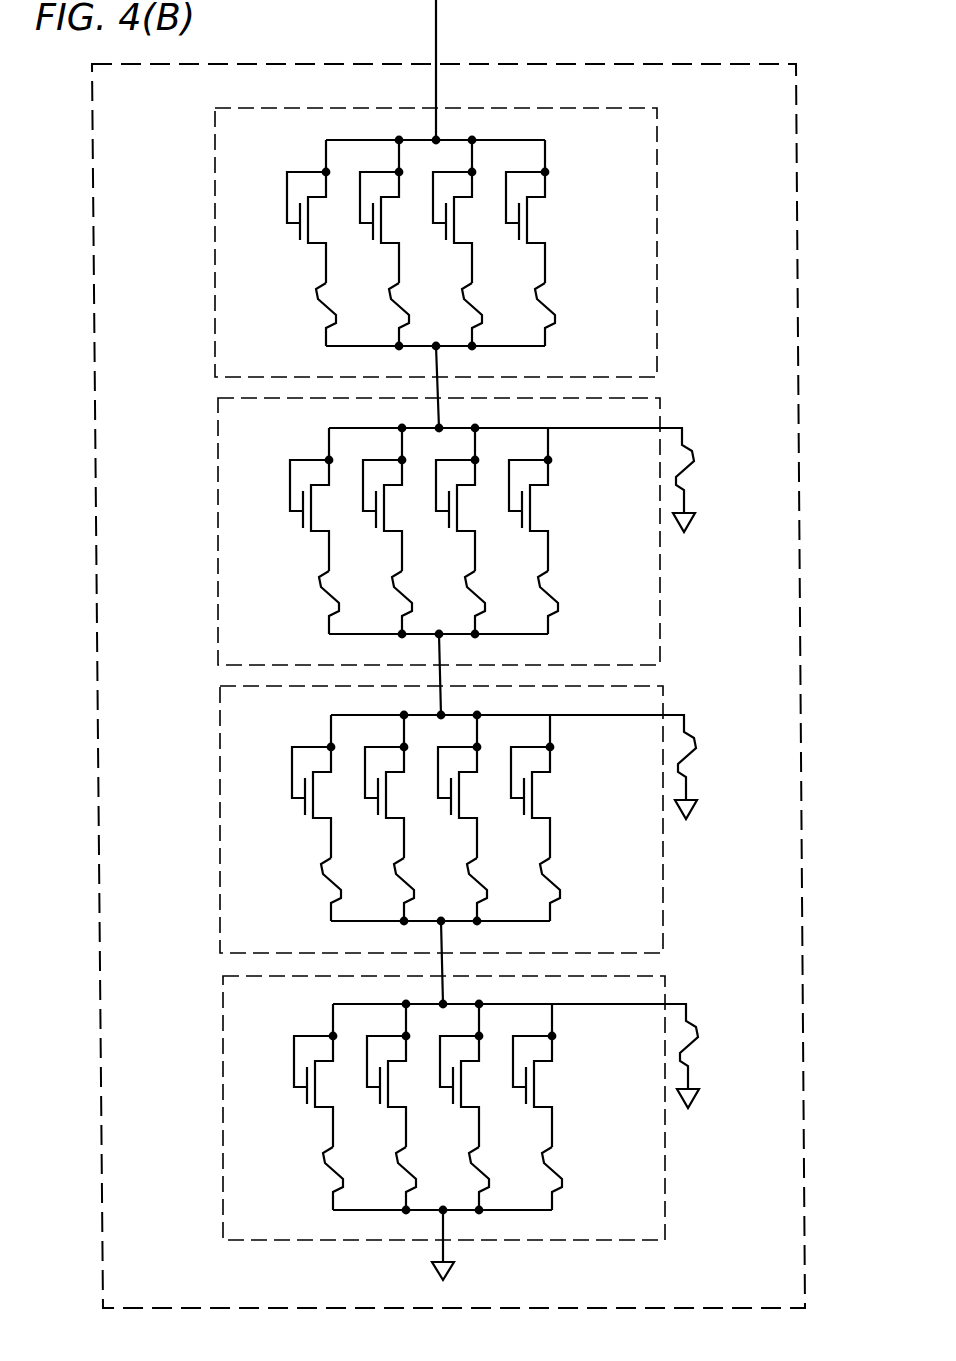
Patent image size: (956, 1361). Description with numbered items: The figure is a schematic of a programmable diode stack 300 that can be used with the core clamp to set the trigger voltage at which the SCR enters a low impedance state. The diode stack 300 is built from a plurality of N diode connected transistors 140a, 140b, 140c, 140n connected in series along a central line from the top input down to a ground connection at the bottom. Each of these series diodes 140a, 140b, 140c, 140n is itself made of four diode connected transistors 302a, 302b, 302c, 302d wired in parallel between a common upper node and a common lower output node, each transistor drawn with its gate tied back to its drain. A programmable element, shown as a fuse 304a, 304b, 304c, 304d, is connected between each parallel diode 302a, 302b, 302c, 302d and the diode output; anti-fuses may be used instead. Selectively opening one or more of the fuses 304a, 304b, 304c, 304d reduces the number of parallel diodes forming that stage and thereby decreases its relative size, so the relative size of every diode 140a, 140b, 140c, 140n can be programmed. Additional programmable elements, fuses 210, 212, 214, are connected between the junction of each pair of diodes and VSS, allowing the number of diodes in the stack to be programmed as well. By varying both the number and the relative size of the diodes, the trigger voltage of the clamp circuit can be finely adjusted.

The diode stack 300 is at (722, 64).
The diode connected transistor 140a is at (214, 142).
The diode connected transistor 140b is at (218, 436).
The diode connected transistor 140c is at (220, 722).
The diode connected transistor 140n is at (223, 1006).
The diode connected transistor 302a is at (284, 643).
The diode connected transistor 302b is at (372, 645).
The diode connected transistor 302c is at (443, 646).
The diode connected transistor 302d is at (579, 643).
The fuse 304a is at (287, 751).
The fuse 304b is at (378, 746).
The fuse 304c is at (501, 735).
The fuse 304d is at (594, 742).
The fuse 210 is at (699, 473).
The fuse 212 is at (701, 760).
The fuse 214 is at (703, 1049).